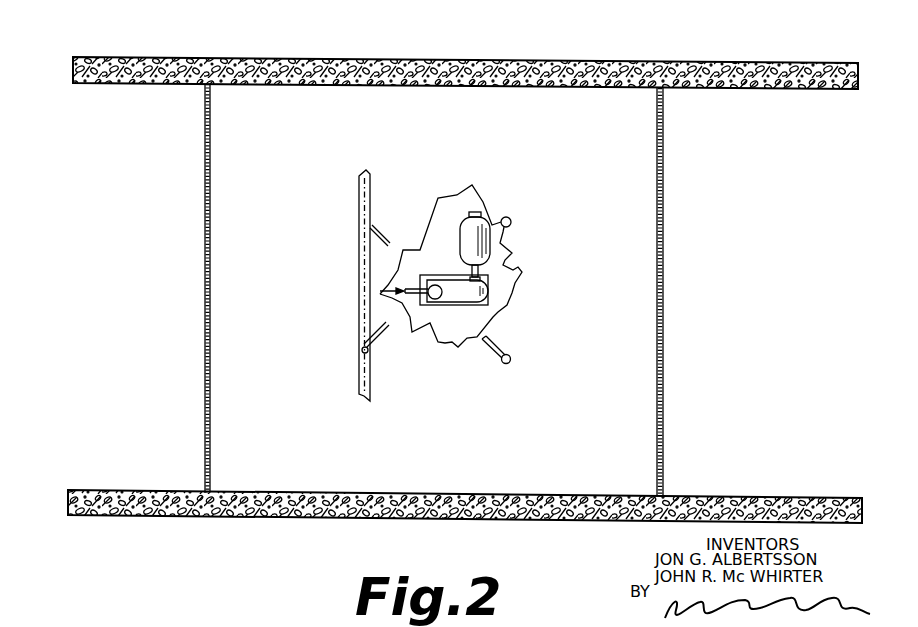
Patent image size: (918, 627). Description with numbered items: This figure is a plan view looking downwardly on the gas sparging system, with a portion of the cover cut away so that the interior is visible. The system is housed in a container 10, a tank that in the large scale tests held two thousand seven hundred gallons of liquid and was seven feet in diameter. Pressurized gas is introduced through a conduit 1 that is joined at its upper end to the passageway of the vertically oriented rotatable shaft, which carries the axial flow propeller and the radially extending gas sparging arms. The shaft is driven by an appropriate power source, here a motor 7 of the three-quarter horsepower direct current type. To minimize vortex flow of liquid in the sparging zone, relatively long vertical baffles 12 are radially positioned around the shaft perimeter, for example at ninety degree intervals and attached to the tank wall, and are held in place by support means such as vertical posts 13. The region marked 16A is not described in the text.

The conduit 1 is at (413, 289).
The motor 7 is at (485, 222).
The container (tank) 10 is at (664, 275).
The vertical baffles 12 is at (497, 343).
The vertical posts 13 is at (511, 359).
The sealing compound housing 16A is at (503, 262).